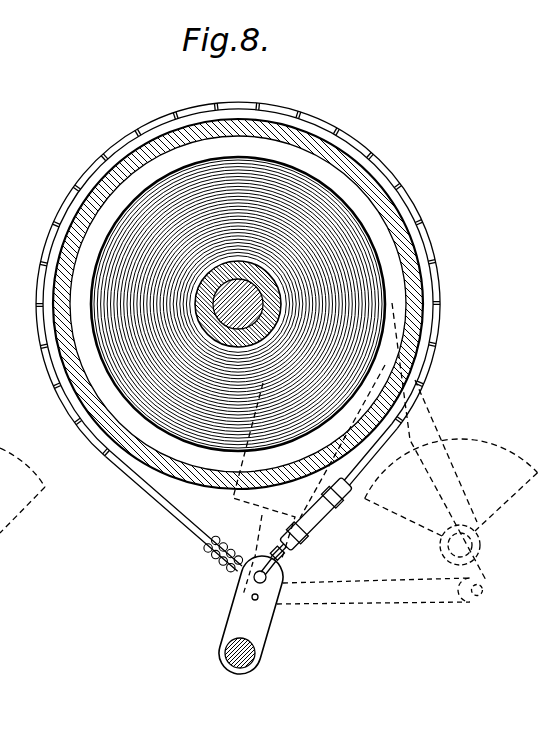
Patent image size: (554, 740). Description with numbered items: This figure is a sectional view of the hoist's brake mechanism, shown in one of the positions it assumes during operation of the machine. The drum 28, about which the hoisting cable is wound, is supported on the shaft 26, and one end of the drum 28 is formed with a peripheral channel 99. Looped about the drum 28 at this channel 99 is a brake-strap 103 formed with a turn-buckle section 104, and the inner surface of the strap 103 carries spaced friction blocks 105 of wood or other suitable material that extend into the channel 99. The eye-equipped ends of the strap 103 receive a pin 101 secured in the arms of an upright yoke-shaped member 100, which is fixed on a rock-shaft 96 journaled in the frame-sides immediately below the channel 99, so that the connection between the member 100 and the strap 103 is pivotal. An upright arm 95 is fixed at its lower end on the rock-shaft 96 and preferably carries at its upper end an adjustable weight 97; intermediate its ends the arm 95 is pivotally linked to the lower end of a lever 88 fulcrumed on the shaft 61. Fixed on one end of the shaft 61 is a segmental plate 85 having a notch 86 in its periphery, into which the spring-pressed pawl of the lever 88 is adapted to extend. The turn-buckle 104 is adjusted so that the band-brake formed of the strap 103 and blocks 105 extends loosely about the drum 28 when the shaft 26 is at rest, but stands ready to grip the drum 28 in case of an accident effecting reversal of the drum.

The shaft 26 is at (238, 318).
The drum 28 is at (178, 195).
The shaft 61 is at (481, 547).
The segmental plate 85 is at (526, 470).
The notch 86 is at (443, 447).
The lever 88 is at (472, 496).
The upright arm 95 is at (258, 545).
The rock-shaft 96 is at (262, 656).
The weight 97 is at (232, 502).
The peripheral channel 99 is at (375, 170).
The yoke-shaped member 100 is at (228, 629).
The pin 101 is at (253, 579).
The brake-strap 103 is at (163, 502).
The turn-buckle section 104 is at (325, 526).
The friction blocks 105 is at (52, 248).